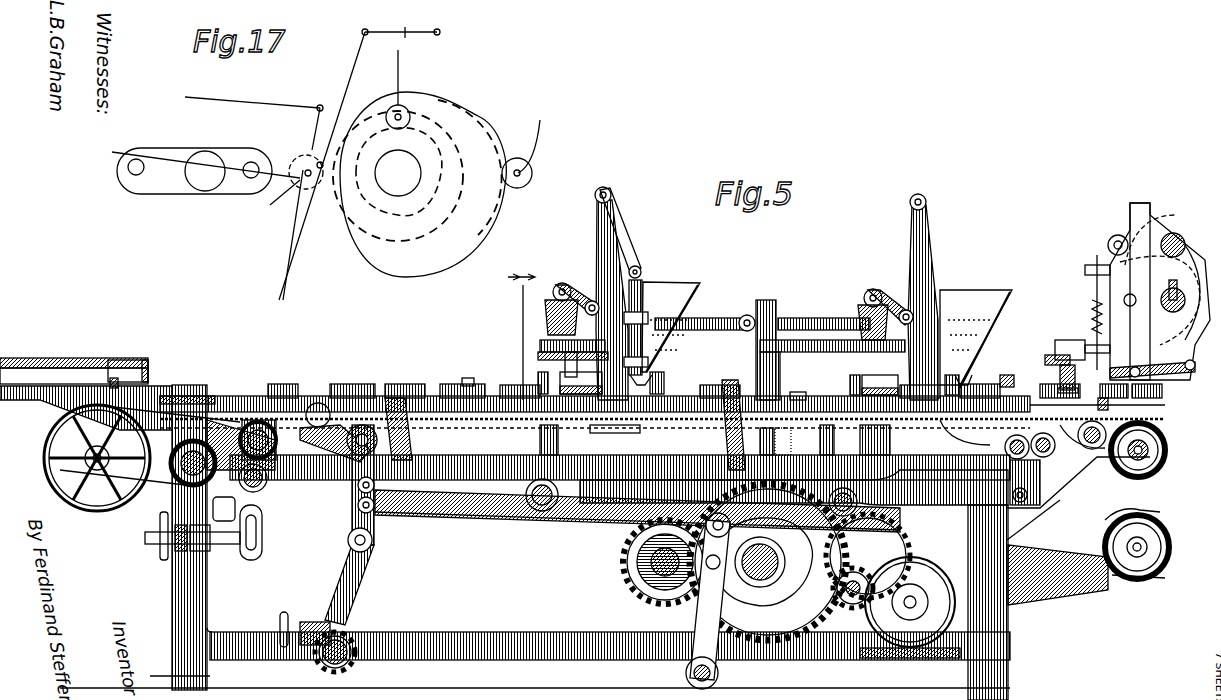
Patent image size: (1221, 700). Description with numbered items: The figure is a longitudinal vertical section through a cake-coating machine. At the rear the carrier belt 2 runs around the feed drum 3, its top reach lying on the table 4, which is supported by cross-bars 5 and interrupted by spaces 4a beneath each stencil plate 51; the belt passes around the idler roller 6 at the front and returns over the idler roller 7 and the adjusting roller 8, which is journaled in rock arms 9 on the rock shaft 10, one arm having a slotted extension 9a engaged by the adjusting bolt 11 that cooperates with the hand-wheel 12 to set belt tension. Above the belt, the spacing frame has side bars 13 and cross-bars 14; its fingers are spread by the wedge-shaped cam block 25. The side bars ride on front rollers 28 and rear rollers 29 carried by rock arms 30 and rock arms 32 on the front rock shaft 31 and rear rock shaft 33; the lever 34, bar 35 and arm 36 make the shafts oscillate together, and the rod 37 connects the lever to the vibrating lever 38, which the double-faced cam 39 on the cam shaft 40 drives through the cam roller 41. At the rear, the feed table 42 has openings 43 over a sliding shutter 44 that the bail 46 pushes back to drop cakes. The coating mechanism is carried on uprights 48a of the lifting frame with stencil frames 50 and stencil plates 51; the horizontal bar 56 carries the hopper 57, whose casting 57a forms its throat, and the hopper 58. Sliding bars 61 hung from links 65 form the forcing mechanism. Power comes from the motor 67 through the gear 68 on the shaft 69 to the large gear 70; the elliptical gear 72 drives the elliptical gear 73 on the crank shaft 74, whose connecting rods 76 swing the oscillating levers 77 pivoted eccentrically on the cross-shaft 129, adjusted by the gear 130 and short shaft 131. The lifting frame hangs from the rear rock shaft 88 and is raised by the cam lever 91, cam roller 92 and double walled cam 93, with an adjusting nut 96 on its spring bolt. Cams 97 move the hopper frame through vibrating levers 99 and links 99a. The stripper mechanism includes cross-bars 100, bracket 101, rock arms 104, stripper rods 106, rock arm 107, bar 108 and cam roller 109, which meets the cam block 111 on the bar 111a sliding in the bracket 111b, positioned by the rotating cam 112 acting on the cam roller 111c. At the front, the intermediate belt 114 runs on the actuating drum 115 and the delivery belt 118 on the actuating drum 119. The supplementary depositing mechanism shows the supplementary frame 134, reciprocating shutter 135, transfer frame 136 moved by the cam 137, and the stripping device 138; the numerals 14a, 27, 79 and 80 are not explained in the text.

In FIG. 5, the carrier belt 2 is at (232, 403).
In FIG. 5, the feed drum 3 is at (60, 495).
In FIG. 5, the table 4 is at (210, 405).
In FIG. 5, the spaces 4a is at (612, 425).
In FIG. 5, the cross-bars 5 is at (250, 422).
In FIG. 5, the idler roller 6 is at (802, 332).
In FIG. 5, the idler roller 7 is at (275, 440).
In FIG. 5, the adjusting roller 8 is at (190, 470).
In FIG. 5, the rock arms 9 is at (224, 509).
In FIG. 5, the slotted extension 9a is at (262, 525).
In FIG. 5, the rock shaft 10 is at (262, 488).
In FIG. 5, the adjusting bolt 11 is at (230, 545).
In FIG. 5, the hand-wheel 12 is at (162, 560).
In FIG. 5, the side bars 13 is at (365, 428).
In FIG. 5, the cross-bars 14 is at (278, 384).
In FIG. 5, the guide block 14a is at (1113, 400).
In FIG. 5, the cam block 25 is at (462, 381).
In FIG. 5, the block 27 is at (808, 390).
In FIG. 5, the front rollers 28 is at (968, 400).
In FIG. 5, the rear rollers 29 is at (315, 404).
In FIG. 5, the rock arms 30 is at (987, 462).
In FIG. 5, the front rock shaft 31 is at (1048, 403).
In FIG. 5, the rock arms 32 is at (348, 425).
In FIG. 5, the rear rock shaft 33 is at (400, 400).
In FIG. 5, the lever 34 is at (360, 470).
In FIG. 5, the bar 35 is at (660, 470).
In FIG. 5, the arm 36 is at (1040, 490).
In FIG. 17, the rod 37 is at (243, 104).
In FIG. 5, the rod 37 is at (485, 520).
In FIG. 17, the vibrating lever 38 is at (292, 235).
In FIG. 5, the vibrating lever 38 is at (695, 650).
In FIG. 17, the double-faced cam 39 is at (470, 222).
In FIG. 5, the double-faced cam 39 is at (752, 620).
In FIG. 17, the cam shaft 40 is at (398, 173).
In FIG. 5, the cam shaft 40 is at (780, 560).
In FIG. 17, the cam roller 41 is at (275, 200).
In FIG. 5, the cam roller 41 is at (738, 598).
In FIG. 5, the feed table 42 is at (55, 375).
In FIG. 5, the openings 43 is at (130, 372).
In FIG. 5, the sliding shutter 44 is at (116, 378).
In FIG. 5, the bail 46 is at (180, 396).
In FIG. 5, the uprights 48a is at (610, 235).
In FIG. 5, the stencil frames 50 is at (536, 380).
In FIG. 5, the stencil plate 51 is at (729, 379).
In FIG. 5, the horizontal bar 56 is at (705, 345).
In FIG. 5, the hopper 57 is at (662, 282).
In FIG. 5, the casting 57a is at (690, 310).
In FIG. 5, the hopper 58 is at (990, 290).
In FIG. 5, the sliding bars 61 is at (645, 300).
In FIG. 5, the links 65 is at (628, 248).
In FIG. 5, the motor 67 is at (925, 565).
In FIG. 5, the gear 68 is at (869, 543).
In FIG. 5, the shaft 69 is at (870, 590).
In FIG. 5, the large gear 70 is at (830, 522).
In FIG. 5, the elliptical gear 72 is at (672, 595).
In FIG. 5, the elliptical gear 73 is at (658, 571).
In FIG. 5, the crank shaft 74 is at (650, 572).
In FIG. 17, the connecting rods 76 is at (165, 160).
In FIG. 5, the connecting rods 76 is at (562, 565).
In FIG. 5, the oscillating levers 77 is at (395, 440).
In FIG. 17, the pin 79 is at (171, 182).
In FIG. 17, the pin 80 is at (140, 172).
In FIG. 5, the rear rock shaft 88 is at (545, 515).
In FIG. 17, the cam lever 91 is at (540, 153).
In FIG. 17, the cam roller 92 is at (533, 178).
In FIG. 17, the double walled cam 93 is at (470, 240).
In FIG. 17, the adjusting nut 96 is at (310, 150).
In FIG. 17, the cams 97 is at (462, 209).
In FIG. 17, the vibrating levers 99 is at (357, 52).
In FIG. 17, the links 99a is at (402, 23).
In FIG. 5, the cross-bars 100 is at (538, 355).
In FIG. 5, the bracket 101 is at (540, 345).
In FIG. 5, the rock arms 104 is at (576, 282).
In FIG. 5, the stripper rods 106 is at (568, 368).
In FIG. 5, the rock arm 107 is at (560, 290).
In FIG. 5, the bar 108 is at (718, 318).
In FIG. 5, the cam roller 109 is at (747, 314).
In FIG. 5, the cam block 111 is at (768, 300).
In FIG. 17, the bar 111a is at (399, 67).
In FIG. 5, the bar 111a is at (780, 372).
In FIG. 5, the bracket 111b is at (728, 435).
In FIG. 17, the cam roller 111c is at (410, 110).
In FIG. 17, the rotating cam 112 is at (440, 145).
In FIG. 5, the intermediate belt 114 is at (1160, 470).
In FIG. 5, the actuating drum 115 is at (1118, 462).
In FIG. 5, the delivery belt 118 is at (1108, 516).
In FIG. 5, the actuating drum 119 is at (1122, 576).
In FIG. 5, the cross-shaft 129 is at (318, 665).
In FIG. 5, the gear 130 is at (360, 660).
In FIG. 5, the short shaft 131 is at (345, 632).
In FIG. 5, the supplementary frame 134 is at (1195, 378).
In FIG. 5, the reciprocating shutter 135 is at (1150, 385).
In FIG. 5, the transfer frame 136 is at (1090, 340).
In FIG. 5, the cam 137 is at (1180, 222).
In FIG. 5, the stripping device 138 is at (1048, 362).